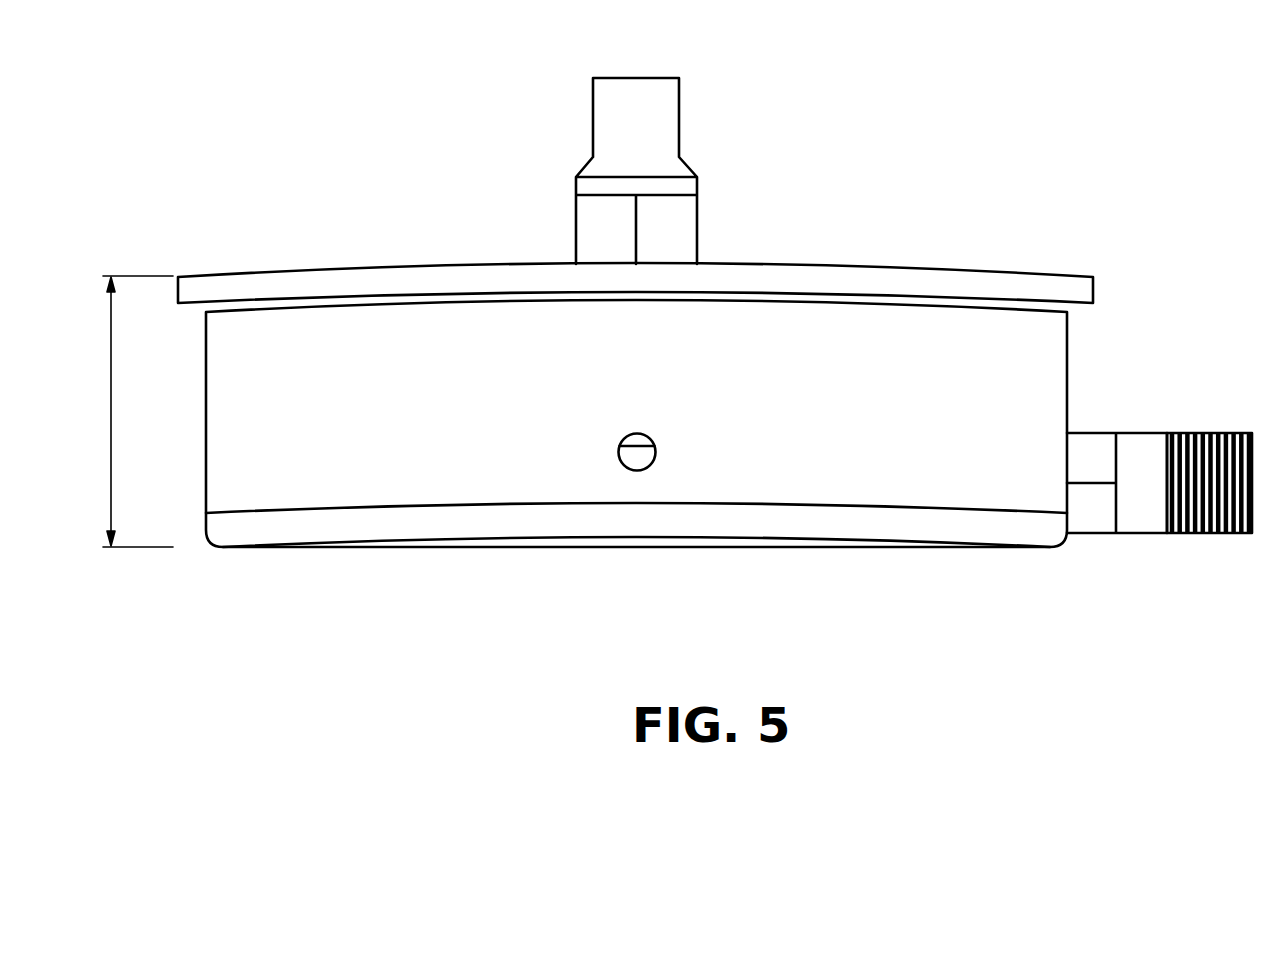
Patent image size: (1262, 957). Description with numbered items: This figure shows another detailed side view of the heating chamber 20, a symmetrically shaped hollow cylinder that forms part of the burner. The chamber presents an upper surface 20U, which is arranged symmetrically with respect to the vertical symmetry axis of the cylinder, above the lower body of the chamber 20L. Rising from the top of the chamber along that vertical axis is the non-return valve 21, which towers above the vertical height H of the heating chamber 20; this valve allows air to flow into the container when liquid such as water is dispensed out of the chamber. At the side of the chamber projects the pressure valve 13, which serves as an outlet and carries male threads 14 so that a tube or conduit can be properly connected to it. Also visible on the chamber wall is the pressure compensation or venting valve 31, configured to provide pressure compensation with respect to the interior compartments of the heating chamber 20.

The heating chamber 20 is at (160, 113).
The upper surface 20U is at (928, 268).
The lower housing body 20L is at (410, 548).
The non-return valve 21 is at (680, 110).
The pressure compensation valve 31 is at (639, 471).
The pressure valve 13 is at (1133, 433).
The threads 14 is at (1214, 535).
The vertical height H is at (128, 411).